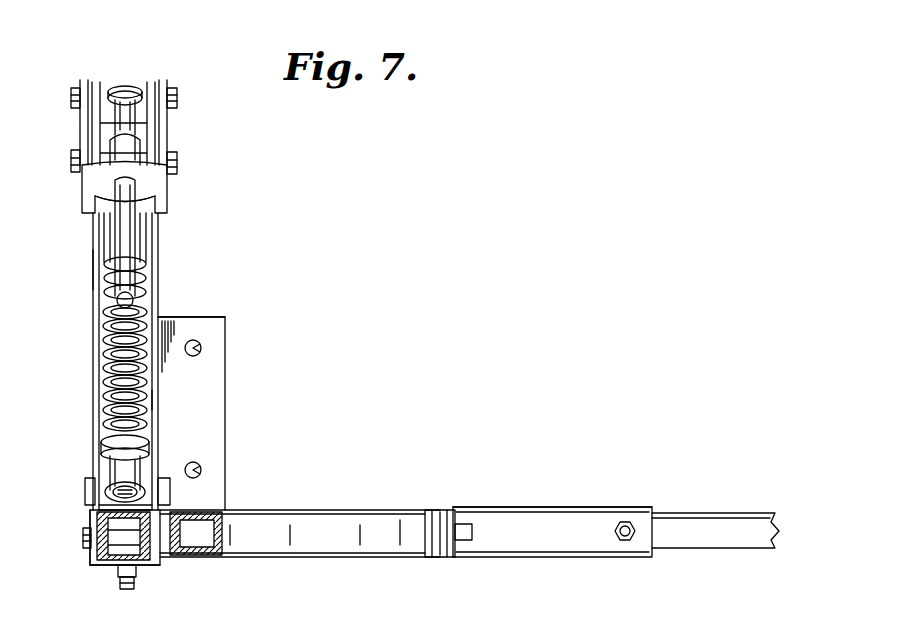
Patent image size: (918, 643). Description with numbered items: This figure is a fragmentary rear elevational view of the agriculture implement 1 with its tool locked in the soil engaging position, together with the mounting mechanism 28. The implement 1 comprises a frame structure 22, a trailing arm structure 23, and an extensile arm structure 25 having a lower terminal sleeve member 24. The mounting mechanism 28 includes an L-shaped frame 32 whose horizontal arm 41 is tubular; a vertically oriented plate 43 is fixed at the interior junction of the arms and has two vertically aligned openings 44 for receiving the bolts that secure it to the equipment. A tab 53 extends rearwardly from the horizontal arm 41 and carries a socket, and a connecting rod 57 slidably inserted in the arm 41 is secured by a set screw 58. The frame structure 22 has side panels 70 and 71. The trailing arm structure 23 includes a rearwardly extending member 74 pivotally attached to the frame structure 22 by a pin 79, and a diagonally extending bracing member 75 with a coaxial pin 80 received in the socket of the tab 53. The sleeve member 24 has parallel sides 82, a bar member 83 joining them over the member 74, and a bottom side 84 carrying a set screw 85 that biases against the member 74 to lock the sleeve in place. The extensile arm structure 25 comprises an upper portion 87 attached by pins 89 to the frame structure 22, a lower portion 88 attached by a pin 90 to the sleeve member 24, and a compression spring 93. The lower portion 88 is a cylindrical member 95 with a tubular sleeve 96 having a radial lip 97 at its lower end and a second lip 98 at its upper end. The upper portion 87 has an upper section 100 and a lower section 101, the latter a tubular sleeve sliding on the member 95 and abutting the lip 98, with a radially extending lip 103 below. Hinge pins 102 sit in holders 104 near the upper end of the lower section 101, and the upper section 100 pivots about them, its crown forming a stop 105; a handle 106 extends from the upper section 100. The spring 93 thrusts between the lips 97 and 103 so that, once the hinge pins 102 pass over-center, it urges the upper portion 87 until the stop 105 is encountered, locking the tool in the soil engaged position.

The agriculture implement 1 is at (214, 192).
The frame structure 22 is at (160, 300).
The trailing arm structure 23 is at (320, 546).
The sleeve member 24 is at (91, 503).
The extensile arm structure 25 is at (108, 238).
The quick mounting mechanism 28 is at (226, 424).
The L-shaped frame 32 is at (590, 506).
The horizontal arm 41 is at (545, 558).
The vertically oriented plate 43 is at (226, 324).
The openings 44 is at (201, 348).
The tab 53 is at (440, 560).
The connecting rod 57 is at (730, 520).
The set screw 58 is at (614, 531).
The side panel 70 is at (160, 396).
The side panel 71 is at (95, 262).
The rearwardly extending member 74 is at (100, 560).
The diagonally extending bracing member 75 is at (405, 525).
The pin 79 is at (85, 538).
The pin 80 is at (473, 532).
The parallel sides 82 is at (93, 515).
The bar member 83 is at (130, 506).
The bottom side 84 is at (108, 570).
The set screw 85 is at (136, 584).
The upper portion 87 is at (88, 203).
The lower portion 88 is at (108, 432).
The pins 89 is at (178, 98).
The pin 90 is at (103, 486).
The compression spring 93 is at (108, 310).
The cylindrical member 95 is at (112, 352).
The tubular sleeve 96 is at (120, 465).
The radial lip 97 is at (142, 442).
The second lip 98 is at (133, 88).
The upper section 100 is at (150, 132).
The lower section 101 is at (142, 242).
The hinge pins 102 is at (178, 162).
The radially extending lip 103 is at (145, 266).
The holders 104 is at (141, 158).
The stop 105 is at (135, 196).
The handle 106 is at (120, 282).